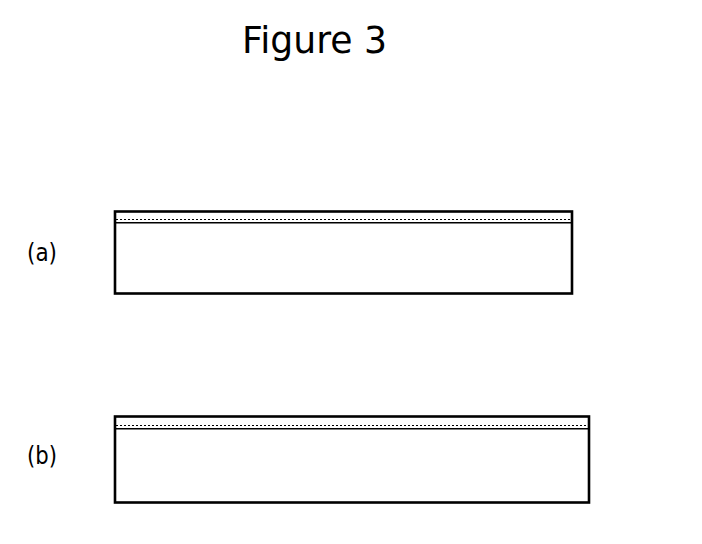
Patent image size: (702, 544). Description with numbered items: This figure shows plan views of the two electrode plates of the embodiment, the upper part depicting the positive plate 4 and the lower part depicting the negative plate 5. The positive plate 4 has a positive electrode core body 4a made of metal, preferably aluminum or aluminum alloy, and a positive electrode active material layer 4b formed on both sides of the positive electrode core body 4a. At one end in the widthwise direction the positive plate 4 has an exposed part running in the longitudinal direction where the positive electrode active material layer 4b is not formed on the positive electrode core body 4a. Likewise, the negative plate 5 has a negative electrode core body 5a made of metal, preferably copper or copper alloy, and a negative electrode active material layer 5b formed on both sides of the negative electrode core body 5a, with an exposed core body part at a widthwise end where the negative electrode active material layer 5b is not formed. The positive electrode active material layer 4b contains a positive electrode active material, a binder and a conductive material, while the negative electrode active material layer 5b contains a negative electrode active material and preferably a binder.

The positive plate 4 is at (343, 212).
The positive electrode core body 4a is at (300, 215).
The positive electrode active material layer 4b is at (409, 237).
The negative plate 5 is at (352, 419).
The negative electrode core body 5a is at (300, 421).
The negative electrode active material layer 5b is at (409, 442).